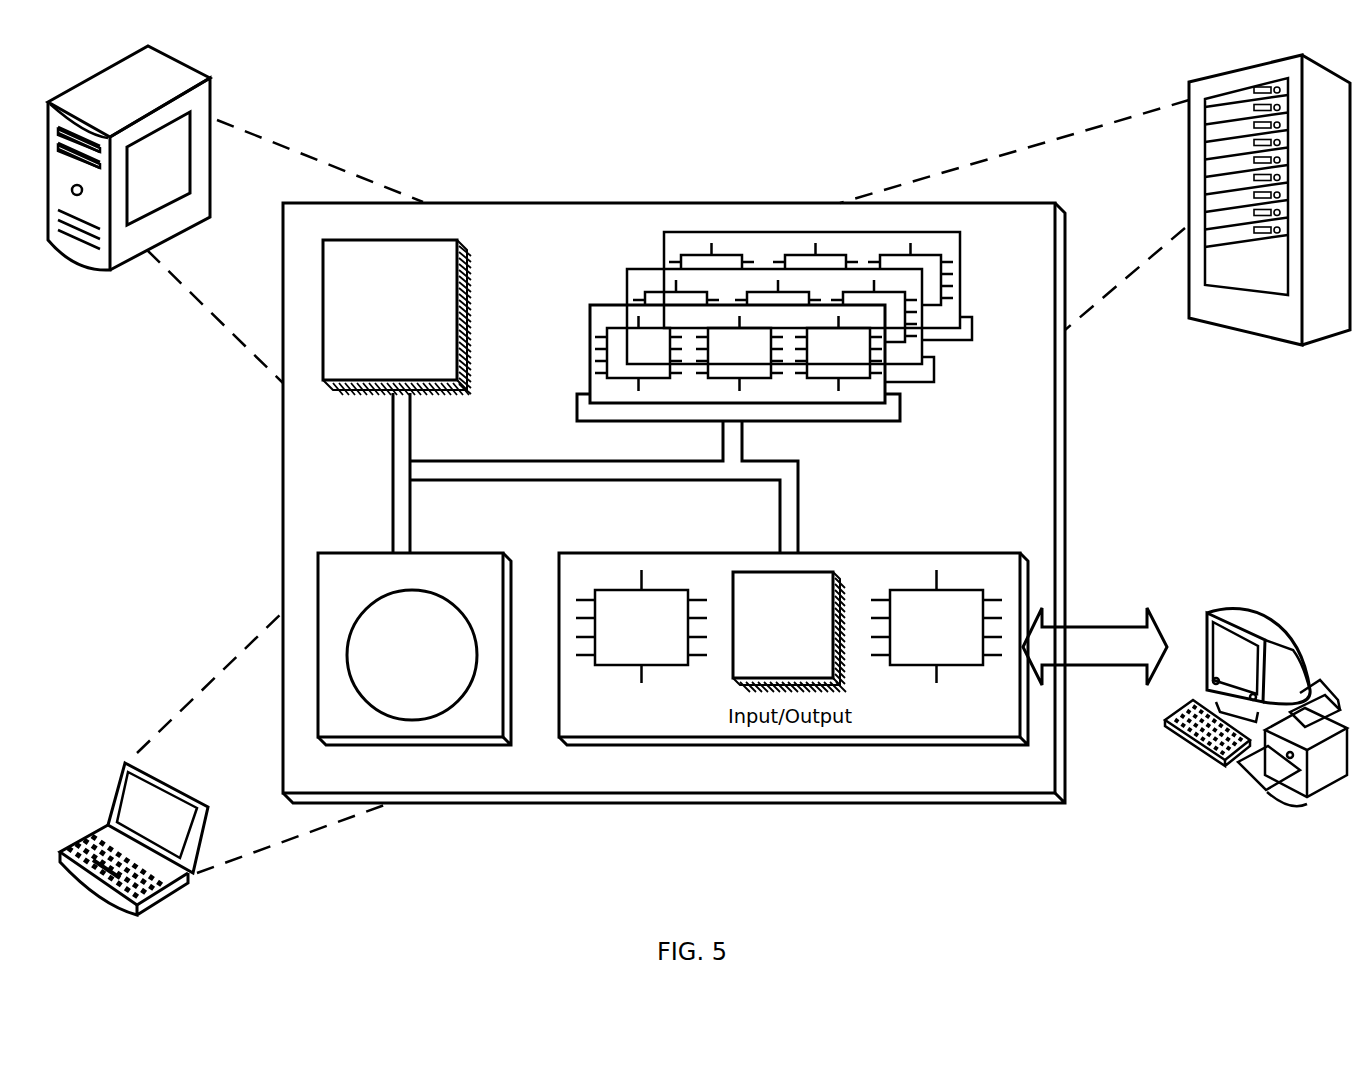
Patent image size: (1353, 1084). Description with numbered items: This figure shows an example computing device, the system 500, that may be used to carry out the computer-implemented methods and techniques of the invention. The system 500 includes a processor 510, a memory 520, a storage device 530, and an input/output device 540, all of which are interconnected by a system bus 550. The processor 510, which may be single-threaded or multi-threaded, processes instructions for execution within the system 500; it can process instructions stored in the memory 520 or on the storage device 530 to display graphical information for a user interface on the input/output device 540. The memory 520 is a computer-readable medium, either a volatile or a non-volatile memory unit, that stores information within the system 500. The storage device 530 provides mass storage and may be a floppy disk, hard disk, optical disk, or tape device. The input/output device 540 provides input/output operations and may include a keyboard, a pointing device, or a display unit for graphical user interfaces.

The system 500 is at (632, 64).
The processor 510 is at (445, 370).
The memory 520 is at (968, 383).
The storage device 530 is at (490, 726).
The input/output device 540 is at (1206, 616).
The system bus 550 is at (592, 481).